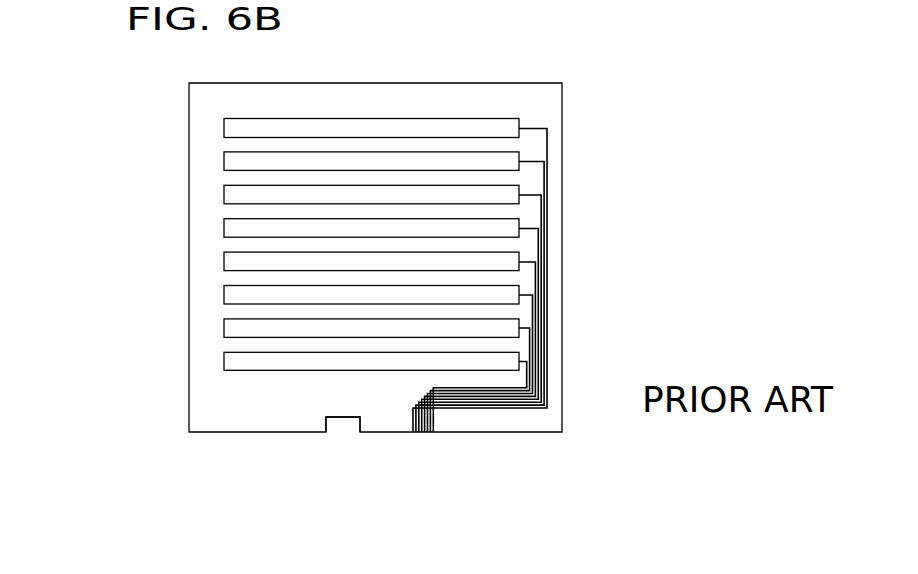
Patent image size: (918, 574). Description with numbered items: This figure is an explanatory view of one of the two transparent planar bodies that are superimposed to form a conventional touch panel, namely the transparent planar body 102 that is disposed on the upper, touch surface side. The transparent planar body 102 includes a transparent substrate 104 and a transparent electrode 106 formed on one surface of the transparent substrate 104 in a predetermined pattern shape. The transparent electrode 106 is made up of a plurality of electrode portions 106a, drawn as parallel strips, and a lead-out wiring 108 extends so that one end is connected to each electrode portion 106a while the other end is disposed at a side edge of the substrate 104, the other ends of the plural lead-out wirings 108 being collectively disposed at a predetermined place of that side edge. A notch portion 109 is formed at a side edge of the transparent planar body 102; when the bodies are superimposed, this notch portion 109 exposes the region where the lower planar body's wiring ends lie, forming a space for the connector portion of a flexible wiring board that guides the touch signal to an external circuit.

The transparent planar body 102 is at (583, 242).
The transparent substrate 104 is at (188, 94).
The transparent electrode 106 is at (101, 112).
The electrode portion 106a is at (224, 128).
The lead-out wiring 108 is at (515, 409).
The notch portion 109 is at (345, 433).